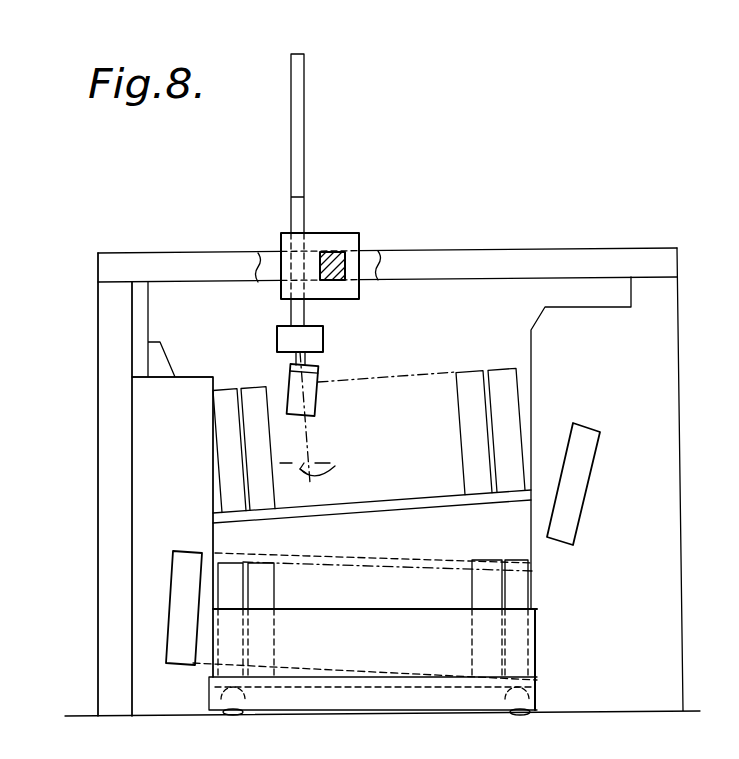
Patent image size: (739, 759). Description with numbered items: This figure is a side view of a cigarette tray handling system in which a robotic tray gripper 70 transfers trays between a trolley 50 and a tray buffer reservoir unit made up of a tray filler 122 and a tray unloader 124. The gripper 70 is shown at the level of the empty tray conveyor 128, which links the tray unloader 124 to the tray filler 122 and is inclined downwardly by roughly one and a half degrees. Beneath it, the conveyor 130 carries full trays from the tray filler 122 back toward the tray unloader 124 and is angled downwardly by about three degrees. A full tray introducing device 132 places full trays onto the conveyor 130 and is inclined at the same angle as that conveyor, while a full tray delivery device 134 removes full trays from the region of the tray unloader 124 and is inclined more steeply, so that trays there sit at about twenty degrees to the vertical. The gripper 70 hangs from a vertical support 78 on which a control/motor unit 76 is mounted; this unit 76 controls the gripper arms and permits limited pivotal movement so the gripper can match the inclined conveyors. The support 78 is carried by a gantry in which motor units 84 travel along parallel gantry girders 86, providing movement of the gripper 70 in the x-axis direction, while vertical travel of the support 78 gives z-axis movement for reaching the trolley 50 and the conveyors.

The trolley 50 is at (540, 645).
The robotic tray gripper 70 is at (317, 403).
The control/motor unit 76 is at (320, 335).
The vertical support 78 is at (300, 103).
The motor unit 84 is at (350, 238).
The gantry girder 86 is at (427, 258).
The tray filler 122 is at (147, 460).
The tray unloader 124 is at (575, 317).
The conveyor 128 is at (446, 505).
The conveyor 130 is at (297, 670).
The full tray introducing device 132 is at (197, 552).
The full tray delivery device 134 is at (600, 432).